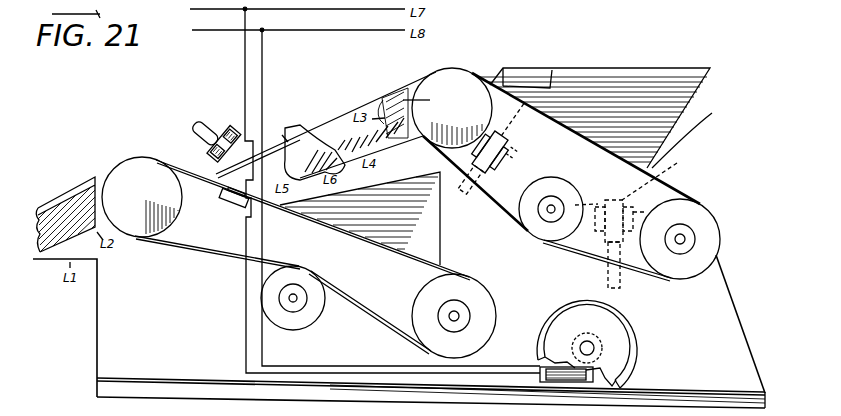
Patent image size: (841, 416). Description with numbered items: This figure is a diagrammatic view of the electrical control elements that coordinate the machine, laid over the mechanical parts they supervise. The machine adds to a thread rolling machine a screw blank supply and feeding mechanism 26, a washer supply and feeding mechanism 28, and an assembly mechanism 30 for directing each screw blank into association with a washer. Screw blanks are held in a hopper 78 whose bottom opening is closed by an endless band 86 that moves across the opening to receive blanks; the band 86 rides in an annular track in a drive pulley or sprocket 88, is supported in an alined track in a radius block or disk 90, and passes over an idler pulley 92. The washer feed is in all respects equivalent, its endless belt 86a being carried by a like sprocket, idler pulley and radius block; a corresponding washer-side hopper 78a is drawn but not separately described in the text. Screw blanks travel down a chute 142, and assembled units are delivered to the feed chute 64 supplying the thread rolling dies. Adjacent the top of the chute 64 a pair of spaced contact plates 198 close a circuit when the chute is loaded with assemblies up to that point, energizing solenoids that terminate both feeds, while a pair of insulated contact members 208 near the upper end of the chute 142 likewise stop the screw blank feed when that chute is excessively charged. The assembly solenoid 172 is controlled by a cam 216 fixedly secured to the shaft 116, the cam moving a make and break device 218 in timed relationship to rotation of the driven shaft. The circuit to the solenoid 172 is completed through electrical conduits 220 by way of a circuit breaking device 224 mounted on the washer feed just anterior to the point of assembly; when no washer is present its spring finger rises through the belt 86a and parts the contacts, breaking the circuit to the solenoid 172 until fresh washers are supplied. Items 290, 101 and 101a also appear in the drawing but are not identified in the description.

The screw blank supply and feeding mechanism 26 is at (695, 191).
The washer supply and feeding mechanism 28 is at (463, 270).
The assembly mechanism 30 is at (197, 148).
The feed chute 64 is at (49, 190).
The hopper 78 is at (625, 62).
The stack of sheets 78a is at (417, 171).
The endless band 86 is at (694, 136).
The endless belt 86a is at (445, 266).
The drive pulley or sprocket 88 is at (707, 232).
The radius block or disk 90 is at (458, 78).
The idler pulley 92 is at (557, 183).
The tensioner 101 is at (667, 176).
The stop 101a is at (527, 79).
The shaft 116 is at (590, 346).
The chute 142 is at (348, 108).
The assembly solenoid 172 is at (203, 124).
The contact plates 198 is at (58, 200).
The contact members 208 is at (433, 107).
The cam 216 is at (603, 345).
The make and break device 218 is at (617, 378).
The electrical conduits 220 is at (243, 70).
The circuit breaking device 224 is at (227, 204).
The guide 290 is at (282, 134).